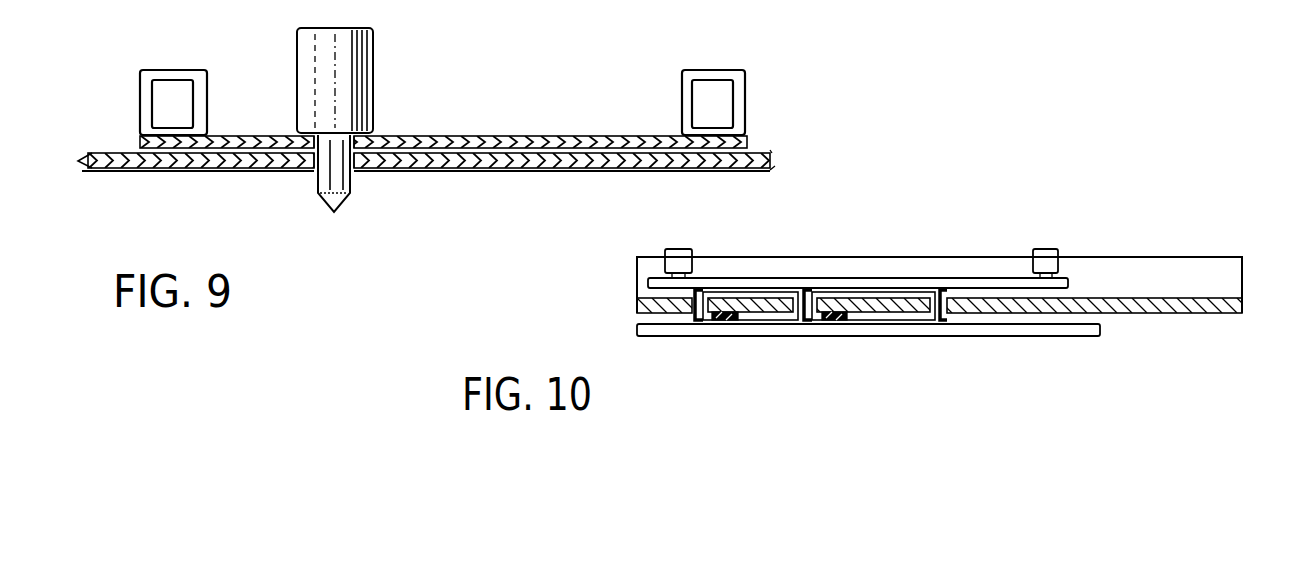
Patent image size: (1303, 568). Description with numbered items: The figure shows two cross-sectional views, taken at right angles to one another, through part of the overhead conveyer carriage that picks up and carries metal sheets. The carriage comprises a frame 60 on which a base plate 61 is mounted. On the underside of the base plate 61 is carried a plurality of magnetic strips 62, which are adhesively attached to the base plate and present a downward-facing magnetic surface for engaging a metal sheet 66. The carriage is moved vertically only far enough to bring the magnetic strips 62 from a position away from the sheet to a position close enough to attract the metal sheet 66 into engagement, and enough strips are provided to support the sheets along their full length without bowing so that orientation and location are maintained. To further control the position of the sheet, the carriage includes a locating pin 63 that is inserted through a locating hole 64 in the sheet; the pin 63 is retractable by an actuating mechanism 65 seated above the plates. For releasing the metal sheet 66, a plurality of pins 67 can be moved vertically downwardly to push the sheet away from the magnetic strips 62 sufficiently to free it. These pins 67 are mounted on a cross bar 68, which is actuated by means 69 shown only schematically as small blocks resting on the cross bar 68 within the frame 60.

In FIG. 9, the frame 60 is at (161, 70).
In FIG. 10, the frame 60 is at (1168, 272).
In FIG. 9, the base plate 61 is at (504, 136).
In FIG. 10, the base plate 61 is at (1155, 313).
In FIG. 9, the magnetic strips 62 is at (263, 152).
In FIG. 10, the magnetic strips 62 is at (730, 322).
In FIG. 9, the locating pin 63 is at (315, 194).
In FIG. 9, the locating hole 64 is at (355, 175).
In FIG. 9, the actuating mechanism 65 is at (297, 33).
In FIG. 9, the metal sheet 66 is at (146, 171).
In FIG. 10, the metal sheet 66 is at (1073, 336).
In FIG. 10, the pins 67 is at (681, 322).
In FIG. 10, the cross bar 68 is at (857, 279).
In FIG. 10, the actuating means 69 is at (690, 249).